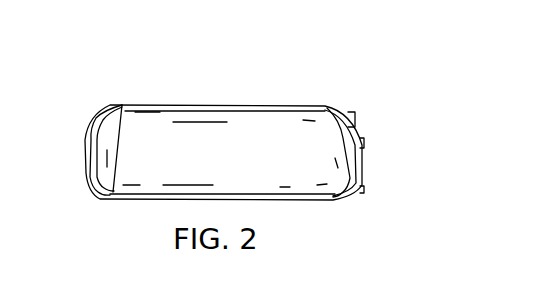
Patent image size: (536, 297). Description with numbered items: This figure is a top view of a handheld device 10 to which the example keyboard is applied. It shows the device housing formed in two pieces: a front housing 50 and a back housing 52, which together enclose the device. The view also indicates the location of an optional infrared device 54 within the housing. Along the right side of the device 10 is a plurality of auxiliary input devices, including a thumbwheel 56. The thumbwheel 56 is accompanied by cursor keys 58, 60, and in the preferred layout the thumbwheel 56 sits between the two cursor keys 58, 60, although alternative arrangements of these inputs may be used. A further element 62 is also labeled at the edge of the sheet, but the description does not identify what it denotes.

The device 10 is at (133, 20).
The front housing 50 is at (277, 201).
The back housing 52 is at (203, 105).
The infrared device 54 is at (242, 150).
The thumbwheel 56 is at (362, 138).
The cursor key 58 is at (347, 112).
The cursor key 60 is at (362, 191).
The element of next figure 62 is at (158, 295).